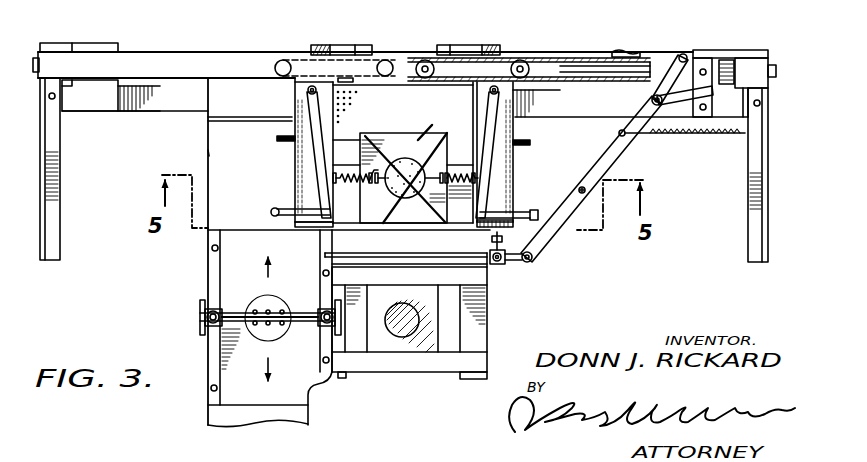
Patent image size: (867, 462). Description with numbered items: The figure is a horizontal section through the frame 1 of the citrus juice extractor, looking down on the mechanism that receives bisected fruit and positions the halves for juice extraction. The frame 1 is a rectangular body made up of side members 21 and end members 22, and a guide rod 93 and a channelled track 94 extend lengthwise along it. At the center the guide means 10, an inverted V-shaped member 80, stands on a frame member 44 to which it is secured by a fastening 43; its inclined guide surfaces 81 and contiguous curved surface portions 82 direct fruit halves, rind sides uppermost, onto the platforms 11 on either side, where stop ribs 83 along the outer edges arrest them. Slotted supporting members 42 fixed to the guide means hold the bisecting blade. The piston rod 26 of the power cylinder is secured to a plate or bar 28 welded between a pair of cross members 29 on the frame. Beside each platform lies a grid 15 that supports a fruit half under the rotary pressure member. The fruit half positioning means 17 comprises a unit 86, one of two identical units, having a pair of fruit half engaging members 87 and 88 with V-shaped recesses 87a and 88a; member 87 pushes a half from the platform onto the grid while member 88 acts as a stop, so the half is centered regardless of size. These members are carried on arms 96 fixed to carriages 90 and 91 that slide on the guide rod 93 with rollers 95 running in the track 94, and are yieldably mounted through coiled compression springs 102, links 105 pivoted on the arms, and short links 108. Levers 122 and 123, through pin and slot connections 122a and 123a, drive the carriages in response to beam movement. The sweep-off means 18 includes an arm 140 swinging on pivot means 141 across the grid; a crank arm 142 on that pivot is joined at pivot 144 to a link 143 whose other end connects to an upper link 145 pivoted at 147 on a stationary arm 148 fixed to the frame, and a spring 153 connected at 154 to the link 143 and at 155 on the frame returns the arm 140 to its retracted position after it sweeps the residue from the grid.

The frame assembly 1 is at (148, 52).
The guide means 10 is at (224, 347).
The platforms 11 is at (232, 153).
The grids 15 is at (393, 92).
The fruit half positioning means 17 is at (446, 131).
The sweep-off means 18 is at (361, 252).
The side members 21 is at (158, 112).
The end members 22 is at (55, 243).
The piston rod 26 is at (403, 338).
The plate or bar 28 is at (425, 352).
The cross members 29 is at (483, 331).
The slotted supporting members 42 is at (205, 317).
The fastening 43 is at (211, 389).
The frame member 44 is at (215, 420).
The inverted V-shaped member 80 is at (210, 257).
The inclined guide surfaces 81 is at (233, 306).
The curved surface portions 82 is at (250, 229).
The stop ribs 83 is at (212, 119).
The positioning unit 86 is at (532, 152).
The fruit half engaging member 87 is at (388, 133).
The fruit half receiving recess 87a is at (432, 126).
The fruit half engaging member 88 is at (436, 223).
The fruit half receiving recess 88a is at (460, 166).
The carriage 90 is at (417, 49).
The carriage 91 is at (504, 62).
The guide rod 93 is at (568, 66).
The channelled track 94 is at (214, 52).
The rollers 95 is at (387, 60).
The arm 96 is at (295, 162).
The coiled compression springs 102 is at (348, 176).
The links 105 is at (300, 109).
The short links 108 is at (280, 209).
The lever 122 is at (345, 37).
The pin and slot connection 122a is at (363, 45).
The lever 123 is at (490, 45).
The pin and slot connection 123a is at (453, 40).
The sweep-off arms 140 is at (407, 241).
The pivot means 141 is at (499, 268).
The crank arm 142 is at (514, 262).
The link 143 is at (564, 225).
The pivot 144 is at (534, 257).
The upper link 145 is at (672, 58).
The pivot 147 is at (651, 100).
The stationary arm 148 is at (660, 98).
The springs 153 is at (676, 137).
The spring connection on link 154 is at (618, 133).
The spring connection on frame 155 is at (744, 135).